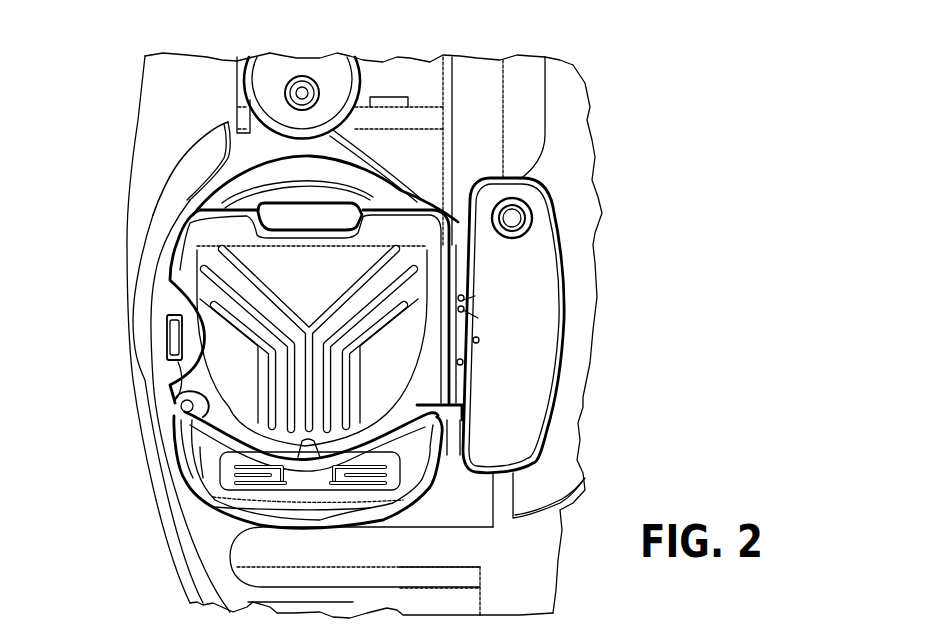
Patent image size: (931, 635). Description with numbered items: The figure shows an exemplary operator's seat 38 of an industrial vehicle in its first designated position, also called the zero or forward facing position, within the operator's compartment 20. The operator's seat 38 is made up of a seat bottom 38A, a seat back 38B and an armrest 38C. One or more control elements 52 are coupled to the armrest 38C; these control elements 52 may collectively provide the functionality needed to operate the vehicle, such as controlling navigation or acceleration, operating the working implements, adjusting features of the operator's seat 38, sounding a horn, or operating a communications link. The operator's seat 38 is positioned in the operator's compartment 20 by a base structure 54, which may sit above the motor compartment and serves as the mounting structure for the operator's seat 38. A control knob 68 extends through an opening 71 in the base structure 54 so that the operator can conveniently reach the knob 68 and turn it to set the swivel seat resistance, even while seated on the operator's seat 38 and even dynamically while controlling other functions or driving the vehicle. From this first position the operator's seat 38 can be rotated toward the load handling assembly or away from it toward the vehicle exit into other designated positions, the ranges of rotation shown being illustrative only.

The operator's compartment 20 is at (666, 102).
The operator's seat 38 is at (165, 241).
The seat bottom 38A is at (217, 328).
The seat back 38B is at (203, 460).
The armrest 38C is at (540, 396).
The control elements 52 is at (527, 215).
The base structure 54 is at (220, 202).
The control knob 68 is at (174, 338).
The opening 71 is at (180, 365).